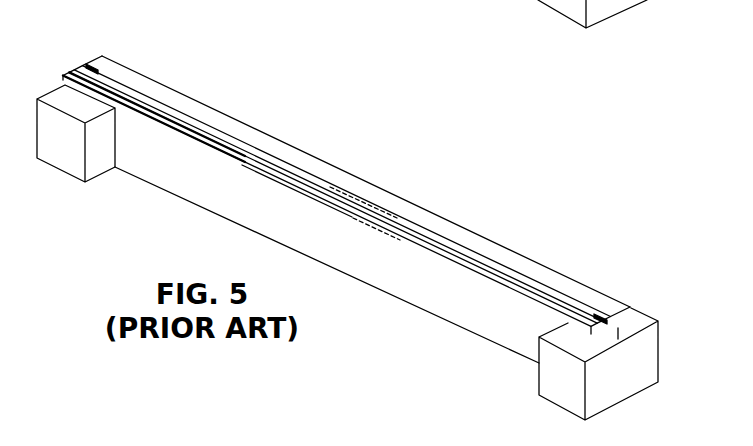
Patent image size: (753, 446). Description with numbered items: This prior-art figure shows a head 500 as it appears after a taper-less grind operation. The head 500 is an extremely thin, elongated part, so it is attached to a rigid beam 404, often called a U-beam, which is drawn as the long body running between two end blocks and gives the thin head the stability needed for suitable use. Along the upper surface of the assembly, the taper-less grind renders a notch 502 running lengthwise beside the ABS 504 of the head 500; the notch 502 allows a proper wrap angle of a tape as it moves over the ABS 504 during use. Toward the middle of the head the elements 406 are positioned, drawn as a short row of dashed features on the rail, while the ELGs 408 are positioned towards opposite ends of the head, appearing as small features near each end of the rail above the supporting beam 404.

The beam 404 is at (447, 293).
The elements 406 is at (360, 200).
The ELGs 408 is at (97, 68).
The head 500 is at (234, 114).
The notch 502 is at (284, 150).
The ABS 504 is at (490, 273).